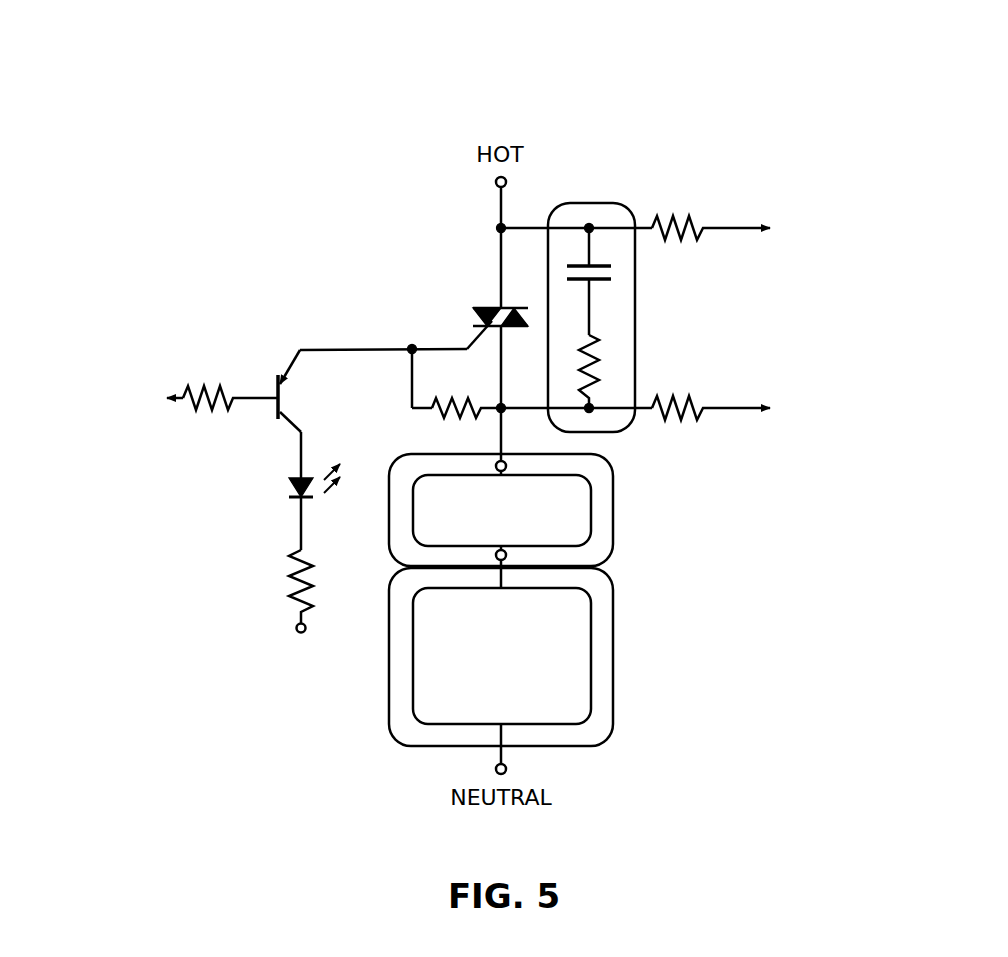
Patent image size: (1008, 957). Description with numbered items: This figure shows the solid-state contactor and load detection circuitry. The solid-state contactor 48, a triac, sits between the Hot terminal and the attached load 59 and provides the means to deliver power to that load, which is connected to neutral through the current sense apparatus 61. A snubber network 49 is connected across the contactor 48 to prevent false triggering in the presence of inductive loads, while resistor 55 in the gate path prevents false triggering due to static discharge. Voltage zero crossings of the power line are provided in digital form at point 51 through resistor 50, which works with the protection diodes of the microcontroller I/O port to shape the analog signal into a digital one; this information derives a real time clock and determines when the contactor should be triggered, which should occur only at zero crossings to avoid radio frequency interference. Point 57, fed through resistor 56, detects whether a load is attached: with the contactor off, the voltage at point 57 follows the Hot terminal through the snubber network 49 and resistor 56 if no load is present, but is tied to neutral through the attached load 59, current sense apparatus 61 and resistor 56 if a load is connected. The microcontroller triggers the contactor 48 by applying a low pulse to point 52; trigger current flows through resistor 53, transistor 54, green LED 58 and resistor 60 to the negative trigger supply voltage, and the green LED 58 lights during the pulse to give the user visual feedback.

The solid-state contactor 48 is at (489, 308).
The snubber network 49 is at (590, 203).
The resistor 50 is at (685, 216).
The point 51 is at (771, 222).
The point 52 is at (165, 396).
The resistor 53 is at (215, 398).
The transistor 54 is at (282, 400).
The resistor 55 is at (432, 408).
The resistor 56 is at (685, 396).
The point 57 is at (771, 402).
The green LED 58 is at (292, 488).
The attached load 59 is at (614, 520).
The resistor 60 is at (292, 592).
The current sense apparatus 61 is at (614, 652).